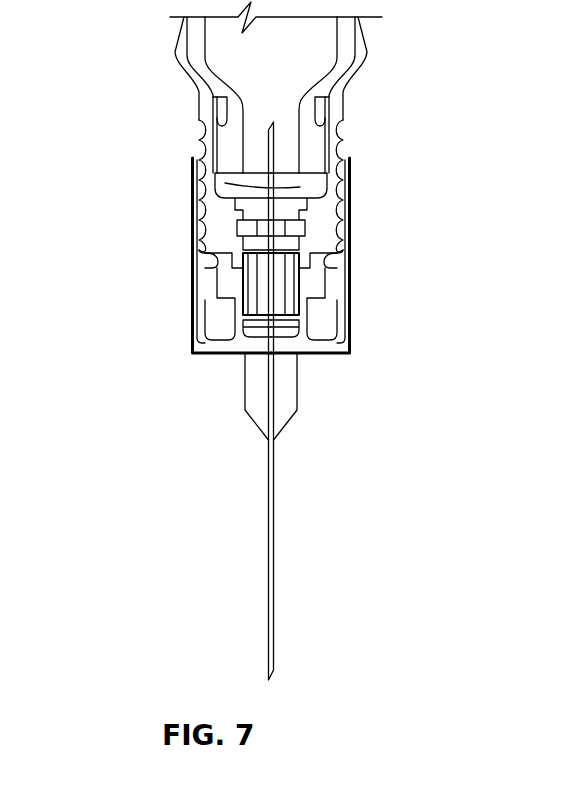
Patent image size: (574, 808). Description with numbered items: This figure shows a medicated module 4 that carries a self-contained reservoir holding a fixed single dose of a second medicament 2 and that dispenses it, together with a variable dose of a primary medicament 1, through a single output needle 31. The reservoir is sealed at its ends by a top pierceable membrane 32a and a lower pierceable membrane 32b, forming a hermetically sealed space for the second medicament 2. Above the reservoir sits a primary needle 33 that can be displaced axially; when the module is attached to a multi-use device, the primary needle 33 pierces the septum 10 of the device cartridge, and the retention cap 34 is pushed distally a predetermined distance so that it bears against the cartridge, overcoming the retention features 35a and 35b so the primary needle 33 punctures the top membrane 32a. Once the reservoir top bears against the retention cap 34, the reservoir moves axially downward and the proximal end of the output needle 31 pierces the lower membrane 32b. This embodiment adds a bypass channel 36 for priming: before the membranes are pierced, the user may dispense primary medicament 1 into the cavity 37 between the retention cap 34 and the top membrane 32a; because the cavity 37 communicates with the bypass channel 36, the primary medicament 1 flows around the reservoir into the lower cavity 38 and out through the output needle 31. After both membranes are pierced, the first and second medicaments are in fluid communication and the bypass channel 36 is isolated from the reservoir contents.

The primary medicament 1 is at (322, 35).
The second medicament 2 is at (298, 362).
The medicated module 4 is at (105, 157).
The septum 10 is at (233, 186).
The output needle 31 is at (286, 542).
The top pierceable membrane 32a is at (305, 238).
The lower pierceable membrane 32b is at (353, 352).
The primary needle 33 is at (276, 152).
The retention cap 34 is at (303, 218).
The retention feature 35a is at (235, 232).
The retention feature 35b is at (235, 302).
The bypass channel 36 is at (247, 278).
The cavity 37 is at (303, 228).
The lower cavity 38 is at (248, 362).